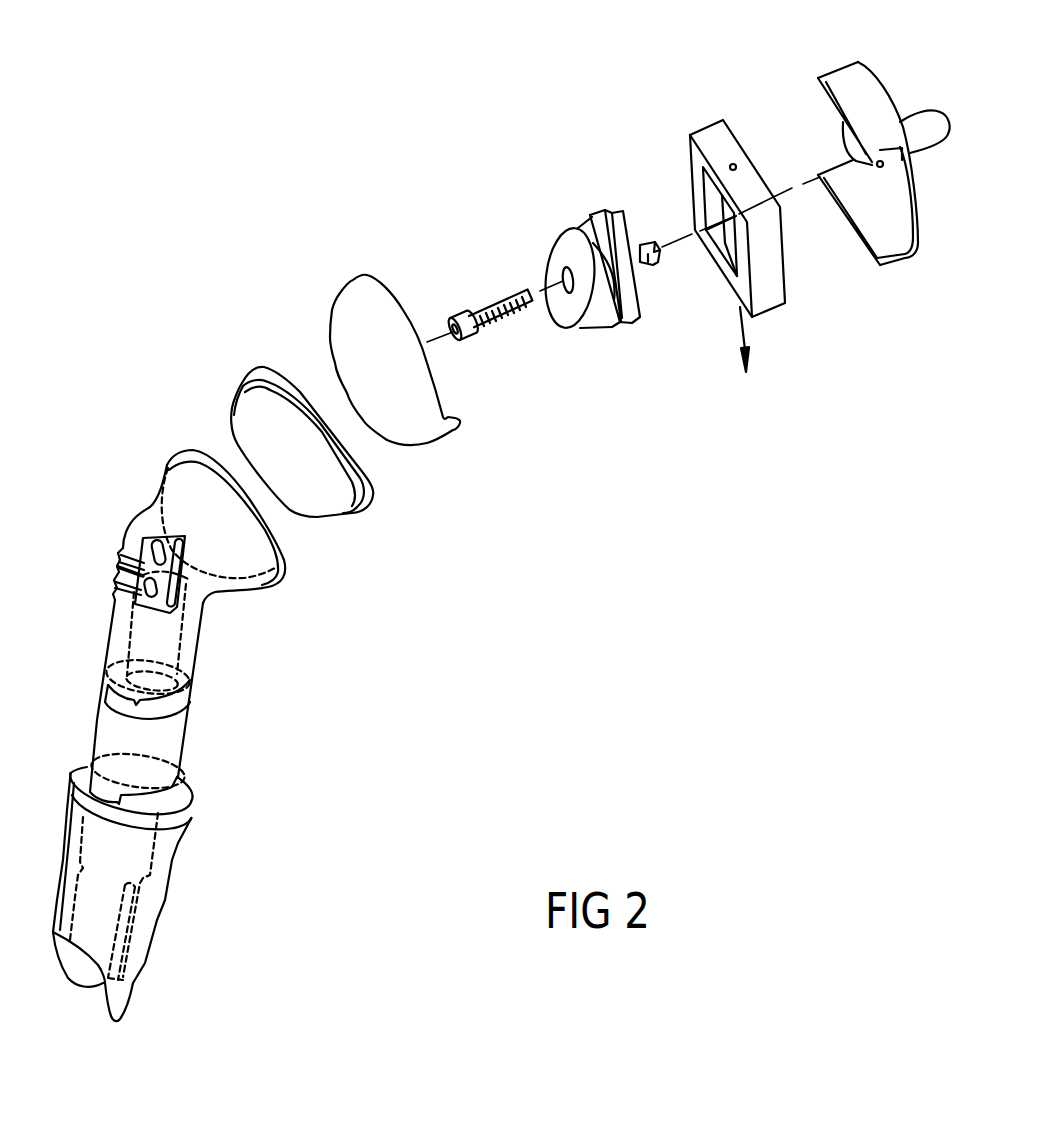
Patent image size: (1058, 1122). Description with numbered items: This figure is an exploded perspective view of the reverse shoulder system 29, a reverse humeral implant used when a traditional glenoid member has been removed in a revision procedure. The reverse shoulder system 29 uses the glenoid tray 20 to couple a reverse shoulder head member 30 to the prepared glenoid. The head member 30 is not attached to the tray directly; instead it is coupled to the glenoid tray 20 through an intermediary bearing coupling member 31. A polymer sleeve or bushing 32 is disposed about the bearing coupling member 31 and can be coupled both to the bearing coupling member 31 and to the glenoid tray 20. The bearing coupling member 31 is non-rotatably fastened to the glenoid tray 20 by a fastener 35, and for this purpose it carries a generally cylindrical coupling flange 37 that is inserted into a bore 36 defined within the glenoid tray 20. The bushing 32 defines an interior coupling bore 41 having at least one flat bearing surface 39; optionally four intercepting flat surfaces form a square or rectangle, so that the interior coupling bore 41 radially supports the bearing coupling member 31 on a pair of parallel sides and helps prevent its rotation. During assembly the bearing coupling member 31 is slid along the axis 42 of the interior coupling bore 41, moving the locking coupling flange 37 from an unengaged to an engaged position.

The glenoid tray 20 is at (863, 158).
The reverse shoulder system 29 is at (468, 203).
The reverse shoulder head member 30 is at (427, 433).
The bearing coupling member 31 is at (600, 328).
The bushing 32 is at (731, 226).
The fastener 35 is at (492, 300).
The bore 36 is at (882, 167).
The coupling flange 37 is at (643, 248).
The flat bearing surface 39 is at (728, 246).
The interior coupling bore 41 is at (708, 195).
The axis 42 is at (733, 164).